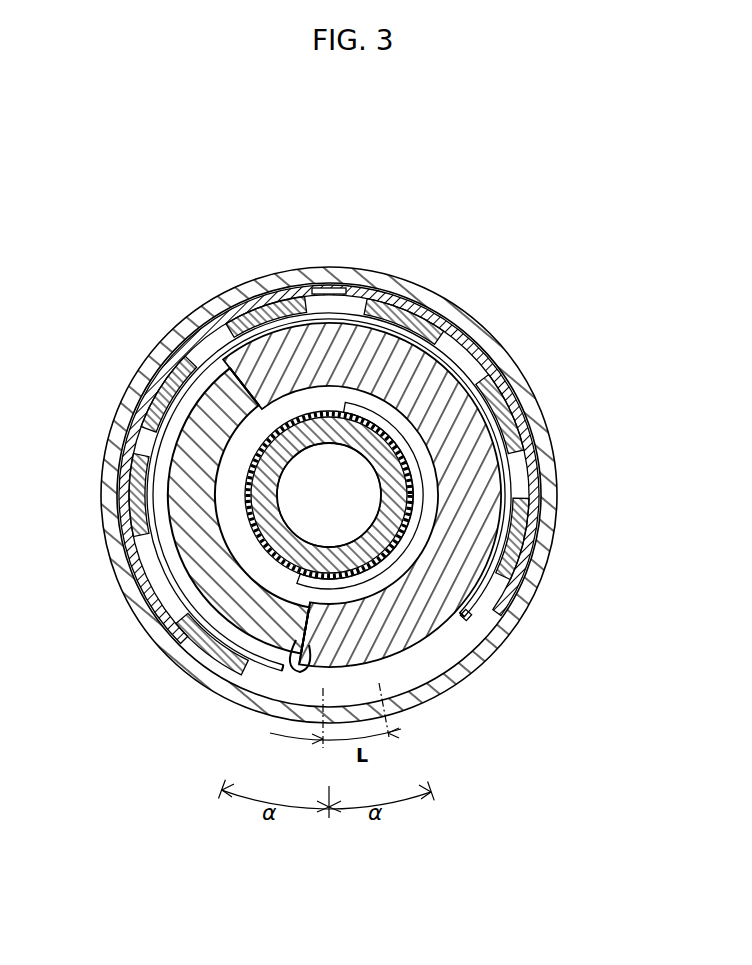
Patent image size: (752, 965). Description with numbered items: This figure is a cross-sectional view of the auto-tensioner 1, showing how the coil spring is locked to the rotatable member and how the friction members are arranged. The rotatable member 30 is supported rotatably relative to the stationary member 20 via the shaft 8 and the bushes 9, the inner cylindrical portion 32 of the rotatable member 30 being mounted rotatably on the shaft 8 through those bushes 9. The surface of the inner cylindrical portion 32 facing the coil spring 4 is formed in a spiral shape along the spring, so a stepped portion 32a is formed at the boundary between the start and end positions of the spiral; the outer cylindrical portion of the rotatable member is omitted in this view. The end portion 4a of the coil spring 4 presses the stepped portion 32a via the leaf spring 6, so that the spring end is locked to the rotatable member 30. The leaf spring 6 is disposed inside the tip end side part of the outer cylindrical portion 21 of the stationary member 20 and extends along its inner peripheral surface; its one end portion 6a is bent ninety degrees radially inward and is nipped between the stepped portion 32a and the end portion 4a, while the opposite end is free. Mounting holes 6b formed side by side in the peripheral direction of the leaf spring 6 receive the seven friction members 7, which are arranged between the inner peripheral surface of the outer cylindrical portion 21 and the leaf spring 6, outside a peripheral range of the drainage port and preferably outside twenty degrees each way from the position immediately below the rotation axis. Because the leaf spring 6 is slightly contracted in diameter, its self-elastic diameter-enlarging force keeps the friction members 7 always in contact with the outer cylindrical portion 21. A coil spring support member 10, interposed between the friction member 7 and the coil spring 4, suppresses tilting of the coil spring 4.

The auto-tensioner 1 is at (135, 203).
The coil spring 4 is at (140, 548).
The end portion of the coil spring 4a is at (262, 656).
The leaf spring 6 is at (163, 591).
The end portion of the leaf spring 6a is at (289, 667).
The mounting holes 6b is at (532, 566).
The friction members 7 is at (252, 297).
The shaft 8 is at (392, 450).
The bushes 9 is at (423, 467).
The coil spring support member 10 is at (137, 511).
The stationary member 20 is at (329, 495).
The outer cylindrical portion of the stationary member 21 is at (330, 270).
The rotatable member 30 is at (329, 464).
The inner cylindrical portion of the rotatable member 32 is at (390, 350).
The stepped portion 32a is at (313, 645).